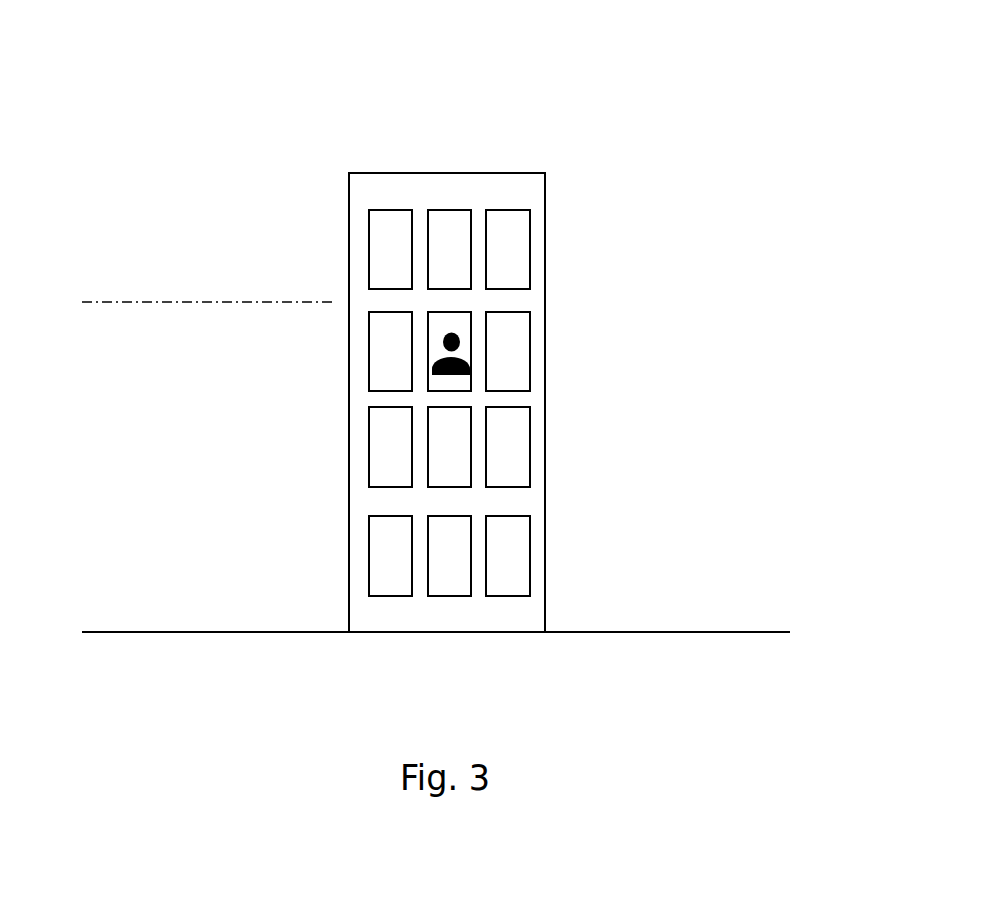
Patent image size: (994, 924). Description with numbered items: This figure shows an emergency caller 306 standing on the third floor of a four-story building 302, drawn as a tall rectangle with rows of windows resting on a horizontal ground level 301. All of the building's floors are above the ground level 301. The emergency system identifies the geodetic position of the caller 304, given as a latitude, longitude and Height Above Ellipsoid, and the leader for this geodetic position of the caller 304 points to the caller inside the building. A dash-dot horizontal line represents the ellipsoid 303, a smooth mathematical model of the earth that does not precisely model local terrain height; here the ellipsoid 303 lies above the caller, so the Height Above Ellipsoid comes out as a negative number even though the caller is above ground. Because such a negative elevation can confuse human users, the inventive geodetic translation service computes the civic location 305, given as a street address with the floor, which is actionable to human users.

The ground level 301 is at (434, 649).
The four-story building 302 is at (545, 512).
The ellipsoid 303 is at (253, 302).
The geodetic position of the caller 304 is at (451, 334).
The civic location 305 is at (453, 334).
The 911 caller 306 is at (456, 335).